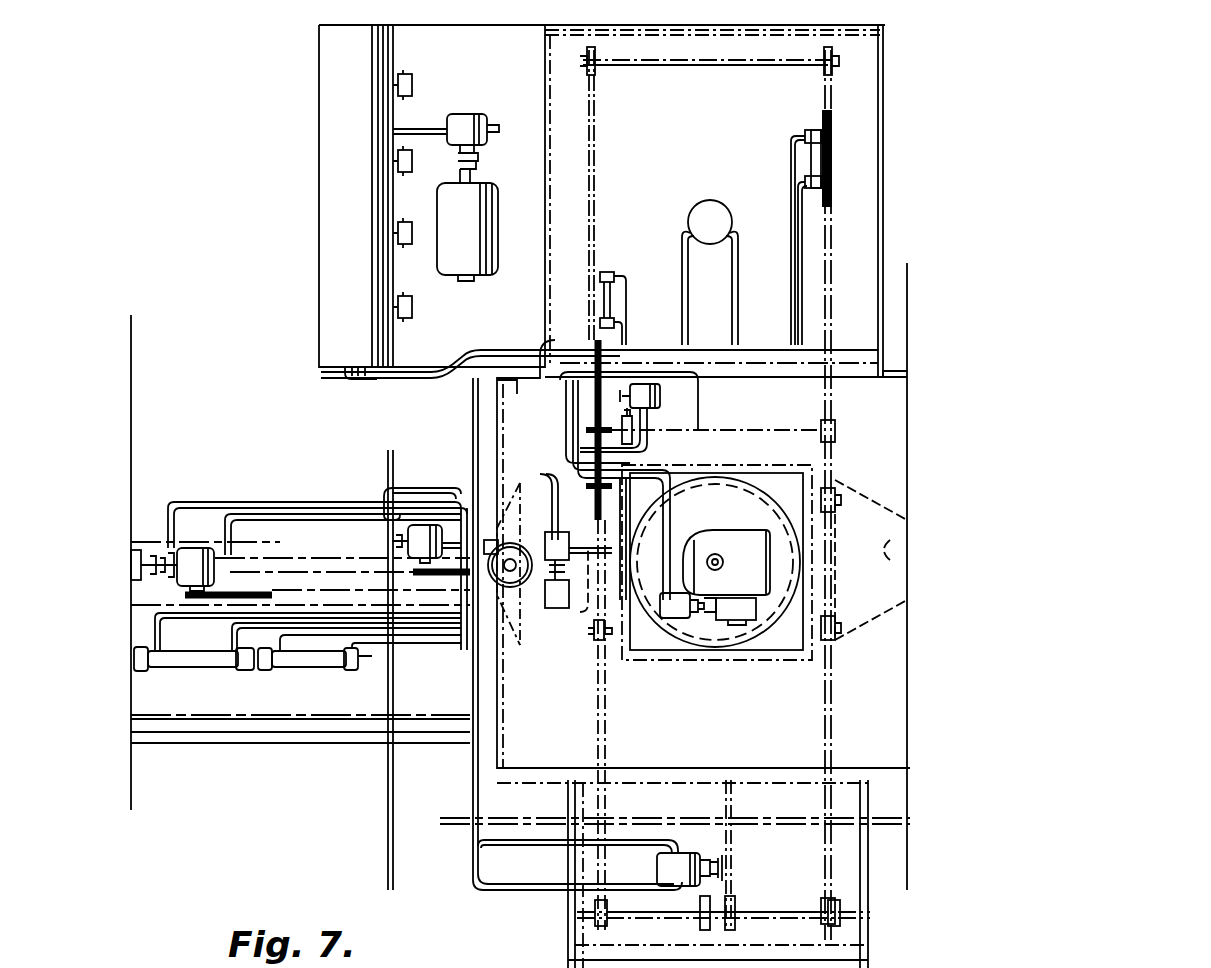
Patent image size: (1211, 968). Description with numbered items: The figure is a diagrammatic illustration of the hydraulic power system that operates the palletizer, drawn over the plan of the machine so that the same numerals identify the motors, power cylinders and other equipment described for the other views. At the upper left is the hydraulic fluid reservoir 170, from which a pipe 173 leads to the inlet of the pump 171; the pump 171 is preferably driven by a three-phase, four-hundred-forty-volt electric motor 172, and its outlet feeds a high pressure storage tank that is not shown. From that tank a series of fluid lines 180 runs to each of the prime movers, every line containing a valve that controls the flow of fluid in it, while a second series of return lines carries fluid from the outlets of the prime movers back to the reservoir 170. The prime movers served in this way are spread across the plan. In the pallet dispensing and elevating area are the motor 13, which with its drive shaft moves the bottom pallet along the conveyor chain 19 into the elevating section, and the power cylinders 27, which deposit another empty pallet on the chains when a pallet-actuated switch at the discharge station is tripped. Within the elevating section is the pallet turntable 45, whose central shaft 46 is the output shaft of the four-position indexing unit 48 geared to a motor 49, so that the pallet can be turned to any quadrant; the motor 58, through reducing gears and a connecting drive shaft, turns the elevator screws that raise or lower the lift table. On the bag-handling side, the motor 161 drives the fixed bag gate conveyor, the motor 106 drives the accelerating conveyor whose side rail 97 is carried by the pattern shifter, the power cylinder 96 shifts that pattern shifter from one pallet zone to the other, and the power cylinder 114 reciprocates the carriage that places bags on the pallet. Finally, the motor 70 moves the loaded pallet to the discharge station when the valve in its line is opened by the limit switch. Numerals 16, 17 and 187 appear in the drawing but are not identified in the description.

The hydraulic fluid reservoir 170 is at (320, 143).
The pipe 173 is at (425, 128).
The pump 171 is at (477, 120).
The electric motor 172 is at (482, 202).
The conveyor chain 19 is at (596, 98).
The vertical shaft 16 is at (825, 94).
The power cylinder 27 is at (811, 156).
The pulley 17 is at (715, 227).
The side rail 97 is at (614, 272).
The fluid lines 180 is at (495, 342).
The motor 13 is at (660, 396).
The pallet turntable 45 is at (668, 650).
The four-position indexing unit 48 is at (726, 562).
The central shaft 46 is at (714, 554).
The motor 49 is at (680, 618).
The motor 58 is at (560, 600).
The motor 161 is at (200, 556).
The motor 106 is at (424, 533).
The power cylinder 96 is at (200, 660).
The power cylinder 114 is at (318, 660).
The motor 70 is at (660, 861).
The conduit 187 is at (518, 892).